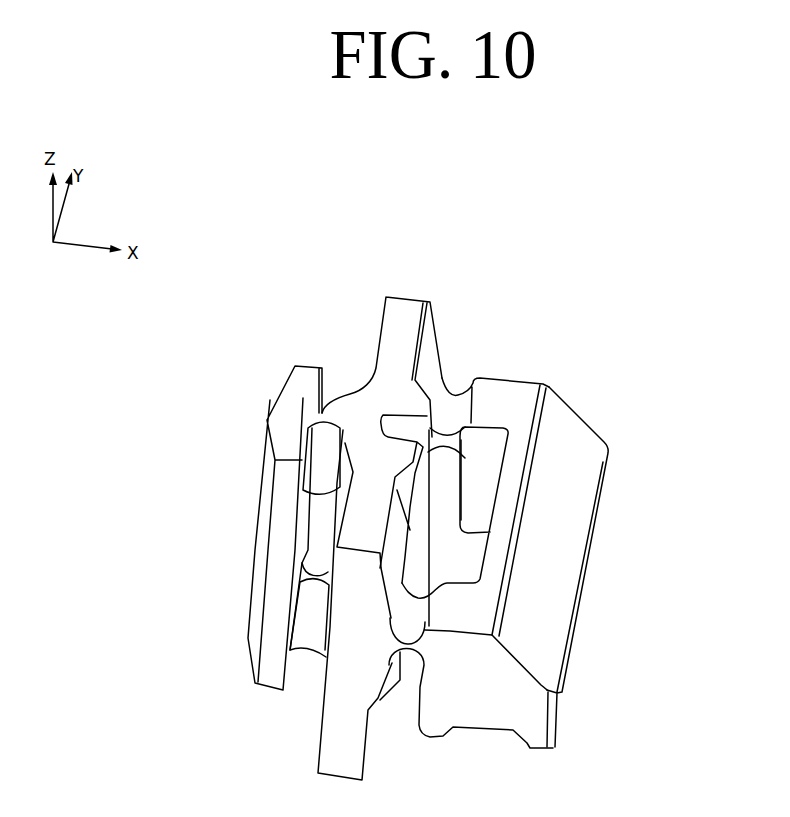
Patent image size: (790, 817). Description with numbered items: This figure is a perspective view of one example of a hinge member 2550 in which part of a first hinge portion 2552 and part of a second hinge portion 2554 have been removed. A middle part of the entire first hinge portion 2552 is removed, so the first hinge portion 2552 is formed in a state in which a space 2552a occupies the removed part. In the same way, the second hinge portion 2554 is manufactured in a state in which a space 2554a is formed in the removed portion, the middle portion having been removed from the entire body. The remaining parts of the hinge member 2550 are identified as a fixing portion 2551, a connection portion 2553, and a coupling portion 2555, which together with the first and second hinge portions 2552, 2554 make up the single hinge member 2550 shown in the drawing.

The hinge member 2550 is at (464, 259).
The fixing portion 2551 is at (583, 505).
The first hinge portion 2552 is at (453, 403).
The space 2552a is at (451, 491).
The connection portion 2553 is at (400, 302).
The second hinge portion 2554 is at (322, 468).
The space 2554a is at (318, 540).
The coupling portion 2555 is at (279, 407).